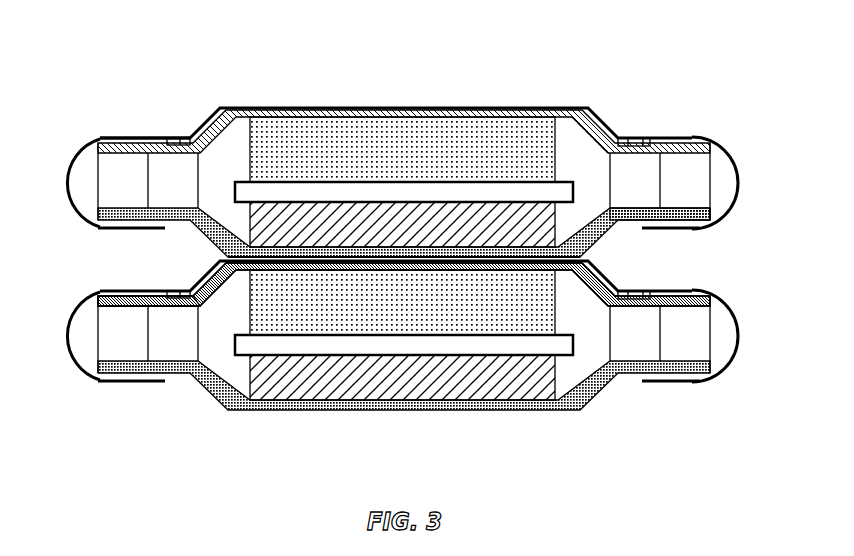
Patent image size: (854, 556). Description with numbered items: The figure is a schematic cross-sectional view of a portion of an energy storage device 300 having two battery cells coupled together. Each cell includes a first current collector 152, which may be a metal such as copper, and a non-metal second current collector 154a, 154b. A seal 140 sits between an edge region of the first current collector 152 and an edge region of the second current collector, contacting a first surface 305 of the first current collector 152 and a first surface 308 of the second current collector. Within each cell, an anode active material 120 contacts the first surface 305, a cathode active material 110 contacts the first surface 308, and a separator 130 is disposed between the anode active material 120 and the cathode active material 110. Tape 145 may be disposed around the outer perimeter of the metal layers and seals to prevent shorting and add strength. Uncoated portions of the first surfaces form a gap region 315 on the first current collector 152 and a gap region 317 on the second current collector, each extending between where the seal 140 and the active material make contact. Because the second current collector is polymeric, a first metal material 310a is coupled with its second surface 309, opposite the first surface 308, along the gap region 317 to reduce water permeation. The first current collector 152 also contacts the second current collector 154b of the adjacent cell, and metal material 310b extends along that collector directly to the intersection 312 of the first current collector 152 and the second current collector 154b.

The energy storage device 300 is at (422, 215).
The cathode active material 110 is at (431, 117).
The anode active material 120 is at (271, 200).
The separator 130 is at (348, 182).
The seal 140 is at (663, 173).
The tape 145 is at (737, 165).
The first current collector 152 is at (712, 222).
The second current collector 154a is at (667, 141).
The second current collector 154b is at (714, 305).
The first surface of first current collector 305 is at (712, 205).
The first surface of second current collector 308 is at (97, 156).
The second surface of second current collector 309 is at (98, 143).
The first metal material 310a is at (596, 114).
The metal material 310b is at (605, 286).
The intersection 312 is at (583, 258).
The gap region of first current collector 315 is at (205, 222).
The gap region of second current collector 317 is at (192, 297).